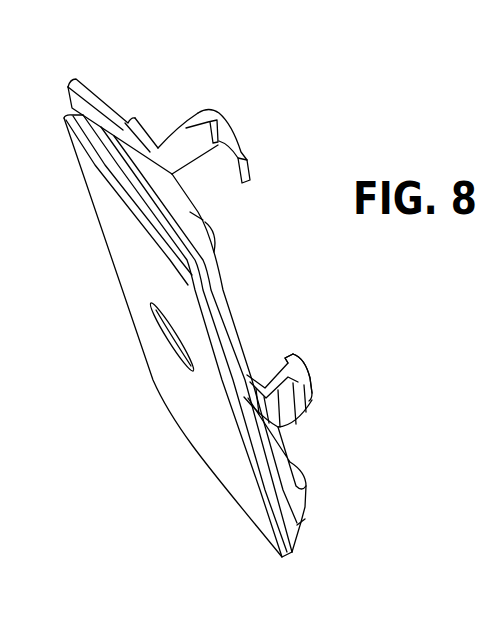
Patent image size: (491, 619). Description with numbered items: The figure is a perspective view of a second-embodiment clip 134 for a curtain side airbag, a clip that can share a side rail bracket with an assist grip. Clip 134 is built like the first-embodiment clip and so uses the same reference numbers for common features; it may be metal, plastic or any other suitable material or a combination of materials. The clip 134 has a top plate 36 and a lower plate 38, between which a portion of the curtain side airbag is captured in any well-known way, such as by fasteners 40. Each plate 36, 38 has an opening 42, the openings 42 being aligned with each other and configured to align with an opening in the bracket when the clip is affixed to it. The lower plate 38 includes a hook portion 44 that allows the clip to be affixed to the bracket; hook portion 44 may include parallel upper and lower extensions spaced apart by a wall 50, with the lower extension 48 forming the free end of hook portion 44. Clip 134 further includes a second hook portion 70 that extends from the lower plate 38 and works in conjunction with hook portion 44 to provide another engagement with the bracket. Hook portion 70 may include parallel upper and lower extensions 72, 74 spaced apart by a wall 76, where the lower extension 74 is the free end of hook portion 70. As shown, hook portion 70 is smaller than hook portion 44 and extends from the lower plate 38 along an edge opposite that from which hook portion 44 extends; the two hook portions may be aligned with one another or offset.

The top plate 36 is at (267, 523).
The lower plate 38 is at (298, 513).
The fasteners 40 is at (198, 215).
The opening 42 is at (175, 346).
The hook portion 44 is at (208, 98).
The lower extension 48 is at (240, 136).
The wall 50 is at (183, 153).
The second hook portion 70 is at (322, 379).
The upper extension 72 is at (250, 390).
The lower extension 74 is at (294, 354).
The wall 76 is at (293, 402).
The clip 134 is at (265, 96).